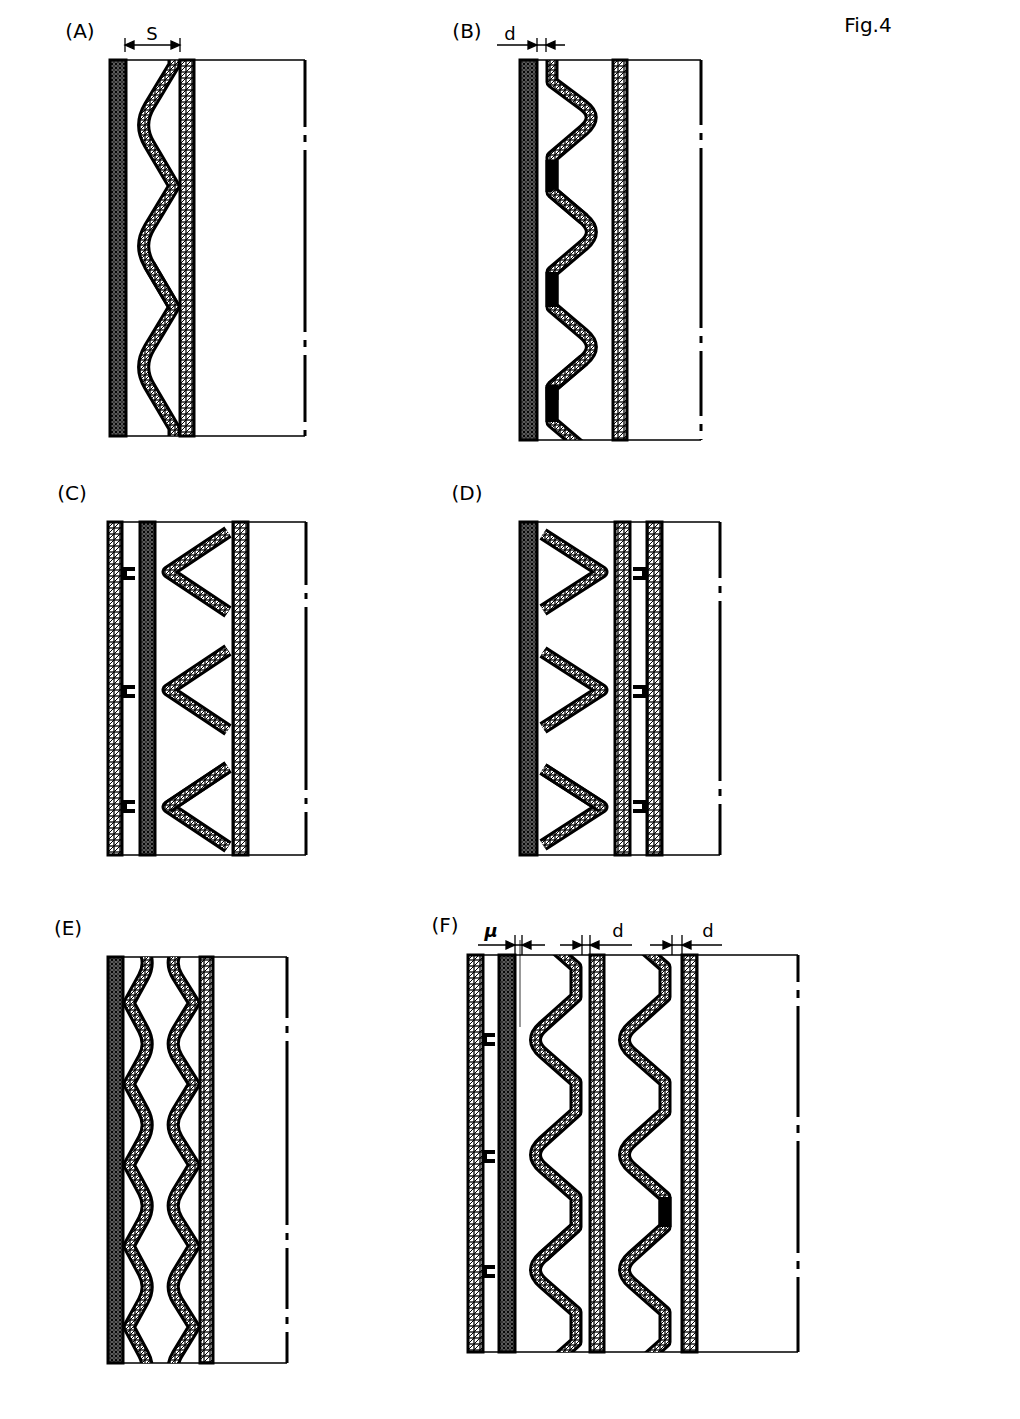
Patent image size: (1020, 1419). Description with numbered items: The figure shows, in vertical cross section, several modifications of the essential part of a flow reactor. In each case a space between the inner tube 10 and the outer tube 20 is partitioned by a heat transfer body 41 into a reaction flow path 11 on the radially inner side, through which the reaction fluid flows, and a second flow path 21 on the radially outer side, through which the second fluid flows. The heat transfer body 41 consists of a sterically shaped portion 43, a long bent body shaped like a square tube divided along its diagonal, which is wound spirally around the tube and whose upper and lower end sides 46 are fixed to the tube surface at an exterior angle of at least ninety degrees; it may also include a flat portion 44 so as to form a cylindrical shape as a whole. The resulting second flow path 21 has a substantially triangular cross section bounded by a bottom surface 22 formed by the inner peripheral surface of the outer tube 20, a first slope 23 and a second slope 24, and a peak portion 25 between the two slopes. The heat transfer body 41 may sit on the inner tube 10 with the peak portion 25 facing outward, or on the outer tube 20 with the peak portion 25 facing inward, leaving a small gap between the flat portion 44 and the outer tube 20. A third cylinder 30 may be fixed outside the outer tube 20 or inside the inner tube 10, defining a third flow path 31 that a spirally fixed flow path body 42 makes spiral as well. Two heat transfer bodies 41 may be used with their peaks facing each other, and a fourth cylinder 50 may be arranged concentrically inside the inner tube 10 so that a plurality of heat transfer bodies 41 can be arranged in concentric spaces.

In FIG. 4A, the inner tube 10 is at (192, 112).
In FIG. 4B, the inner tube 10 is at (628, 108).
In FIG. 4C, the inner tube 10 is at (248, 570).
In FIG. 4D, the inner tube 10 is at (628, 627).
In FIG. 4E, the inner tube 10 is at (213, 980).
In FIG. 4F, the inner tube 10 is at (697, 1142).
In FIG. 4A, the reaction flow path 11 is at (155, 178).
In FIG. 4B, the reaction flow path 11 is at (597, 295).
In FIG. 4C, the reaction flow path 11 is at (198, 637).
In FIG. 4D, the reaction flow path 11 is at (593, 665).
In FIG. 4E, the reaction flow path 11 is at (163, 1253).
In FIG. 4F, the reaction flow path 11 is at (533, 1217).
In FIG. 4A, the outer tube 20 is at (110, 68).
In FIG. 4B, the outer tube 20 is at (520, 87).
In FIG. 4C, the outer tube 20 is at (140, 545).
In FIG. 4D, the outer tube 20 is at (528, 613).
In FIG. 4E, the outer tube 20 is at (110, 968).
In FIG. 4F, the outer tube 20 is at (499, 1110).
In FIG. 4A, the second flow path 21 is at (168, 138).
In FIG. 4B, the second flow path 21 is at (555, 117).
In FIG. 4C, the second flow path 21 is at (217, 692).
In FIG. 4D, the second flow path 21 is at (553, 563).
In FIG. 4F, the second flow path 21 is at (558, 1270).
In FIG. 4B, the bottom surface 22 is at (540, 248).
In FIG. 4B, the first slope 23 is at (557, 205).
In FIG. 4B, the second slope 24 is at (557, 258).
In FIG. 4B, the peak portion 25 is at (597, 222).
In FIG. 4C, the third cylinder 30 is at (108, 605).
In FIG. 4D, the third cylinder 30 is at (660, 557).
In FIG. 4F, the third cylinder 30 is at (468, 977).
In FIG. 4C, the third flow path 31 is at (132, 630).
In FIG. 4D, the third flow path 31 is at (662, 778).
In FIG. 4F, the third flow path 31 is at (495, 1087).
In FIG. 4A, the heat transfer body 41 is at (148, 277).
In FIG. 4C, the heat transfer body 41 is at (205, 785).
In FIG. 4D, the heat transfer body 41 is at (548, 762).
In FIG. 4E, the heat transfer body 41 is at (187, 1143).
In FIG. 4F, the heat transfer body 41 is at (550, 1307).
In FIG. 4C, the flow path body 42 is at (110, 725).
In FIG. 4D, the flow path body 42 is at (647, 720).
In FIG. 4F, the flow path body 42 is at (488, 1162).
In FIG. 4B, the sterically shaped portion 43 is at (590, 377).
In FIG. 4B, the flat portion 44 is at (560, 408).
In FIG. 4B, the upper and lower end sides 46 is at (553, 397).
In FIG. 4F, the fourth cylinder 50 is at (697, 1102).